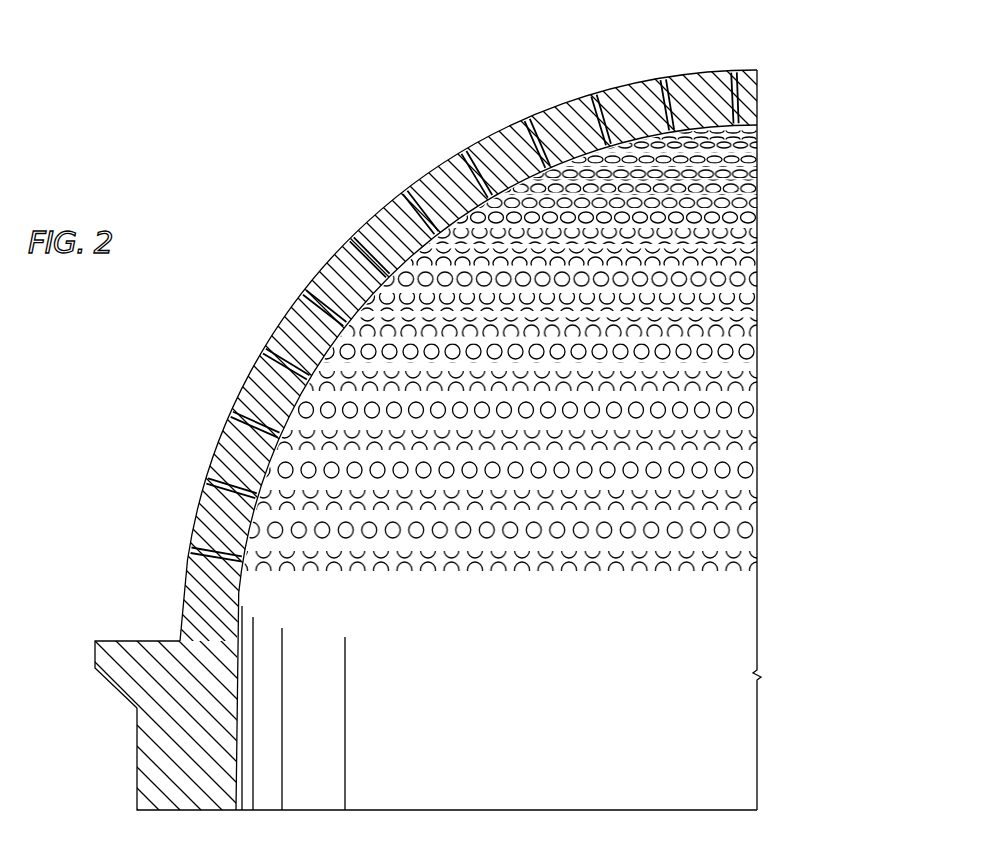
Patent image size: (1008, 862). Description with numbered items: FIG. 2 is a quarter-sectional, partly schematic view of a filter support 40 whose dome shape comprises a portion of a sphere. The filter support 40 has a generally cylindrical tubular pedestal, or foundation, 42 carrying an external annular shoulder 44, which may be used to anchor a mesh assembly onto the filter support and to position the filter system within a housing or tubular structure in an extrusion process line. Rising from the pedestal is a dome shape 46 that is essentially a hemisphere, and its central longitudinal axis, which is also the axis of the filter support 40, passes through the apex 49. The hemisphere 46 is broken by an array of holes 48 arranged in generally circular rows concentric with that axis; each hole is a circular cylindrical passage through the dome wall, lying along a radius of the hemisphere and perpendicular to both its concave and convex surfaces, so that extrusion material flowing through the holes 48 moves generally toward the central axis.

The filter support 40 is at (352, 214).
The tubular pedestal 42 is at (138, 770).
The annular shoulder 44 is at (123, 650).
The dome shape 46 is at (578, 103).
The array of holes 48 is at (516, 597).
The apex 49 is at (759, 69).